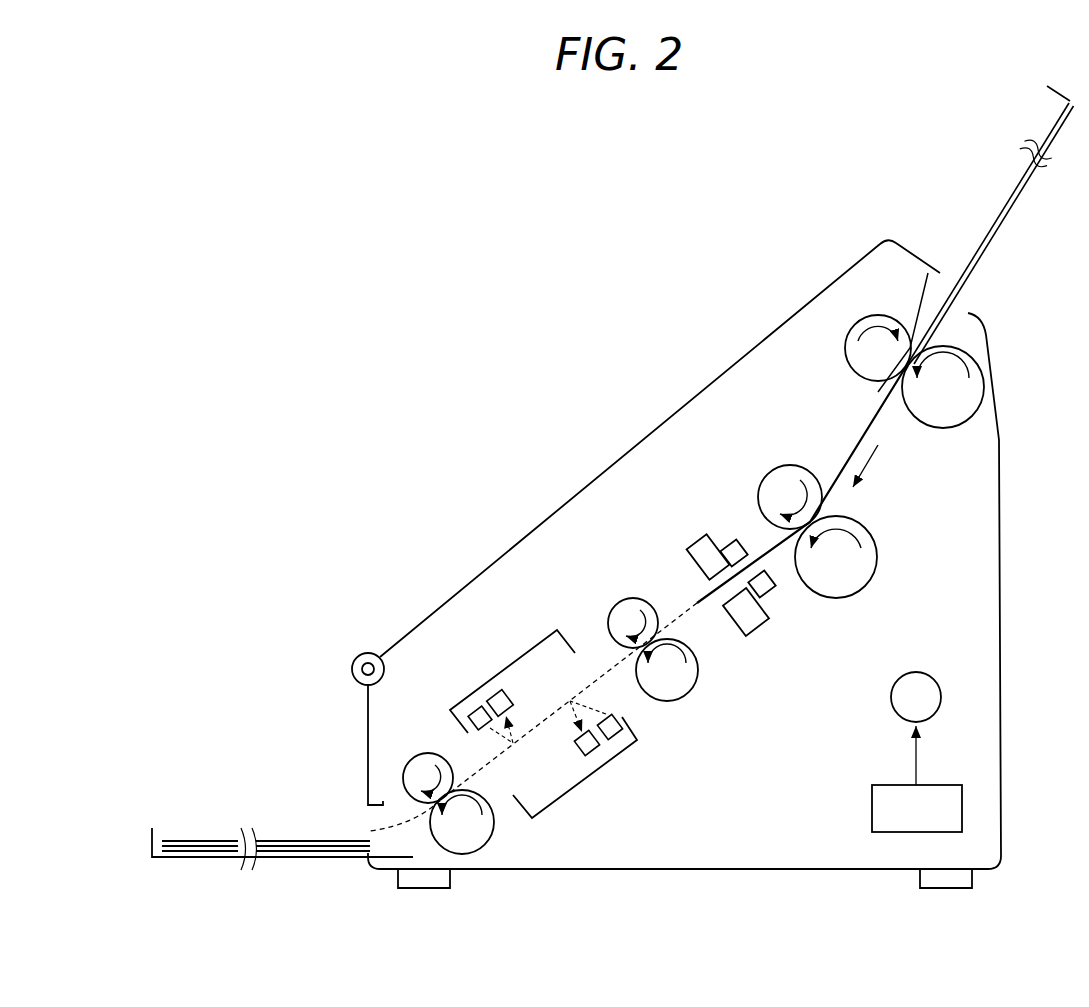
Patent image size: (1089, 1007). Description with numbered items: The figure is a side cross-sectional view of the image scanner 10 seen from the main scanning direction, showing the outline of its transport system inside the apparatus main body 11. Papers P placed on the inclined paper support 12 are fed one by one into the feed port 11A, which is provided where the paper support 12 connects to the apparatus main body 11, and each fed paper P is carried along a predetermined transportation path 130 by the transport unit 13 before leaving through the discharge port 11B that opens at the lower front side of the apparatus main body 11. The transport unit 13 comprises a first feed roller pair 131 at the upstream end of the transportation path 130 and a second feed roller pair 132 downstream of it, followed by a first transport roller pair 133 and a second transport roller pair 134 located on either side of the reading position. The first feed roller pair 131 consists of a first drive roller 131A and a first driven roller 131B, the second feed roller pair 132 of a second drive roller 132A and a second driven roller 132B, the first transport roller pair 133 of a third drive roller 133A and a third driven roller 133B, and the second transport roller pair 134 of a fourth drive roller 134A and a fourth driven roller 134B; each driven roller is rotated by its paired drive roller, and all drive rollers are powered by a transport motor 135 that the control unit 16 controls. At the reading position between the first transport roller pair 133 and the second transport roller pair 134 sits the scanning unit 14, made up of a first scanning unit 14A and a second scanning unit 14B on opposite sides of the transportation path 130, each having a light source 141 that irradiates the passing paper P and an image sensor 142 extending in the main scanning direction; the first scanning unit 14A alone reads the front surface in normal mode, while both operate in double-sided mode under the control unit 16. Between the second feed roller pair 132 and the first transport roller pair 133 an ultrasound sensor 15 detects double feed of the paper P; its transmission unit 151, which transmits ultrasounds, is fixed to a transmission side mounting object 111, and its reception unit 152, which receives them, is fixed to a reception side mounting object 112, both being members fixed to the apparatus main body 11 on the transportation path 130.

The image scanner 10 is at (503, 386).
The apparatus main body 11 is at (1002, 640).
The feed port 11A is at (928, 285).
The discharge port 11B is at (370, 812).
The paper support 12 is at (992, 240).
The transport unit 13 is at (957, 537).
The scanning unit 14 is at (657, 818).
The first scanning unit 14A is at (572, 790).
The second scanning unit 14B is at (522, 652).
The ultrasound sensor 15 is at (772, 608).
The control unit 16 is at (962, 808).
The transmission side mounting object 111 is at (698, 542).
The reception side mounting object 112 is at (753, 638).
The transportation path 130 is at (702, 612).
The first feed roller pair 131 is at (928, 373).
The first drive roller 131A is at (942, 430).
The first driven roller 131B is at (858, 322).
The second feed roller pair 132 is at (808, 468).
The second drive roller 132A is at (877, 572).
The second driven roller 132B is at (800, 466).
The first transport roller pair 133 is at (642, 616).
The third drive roller 133A is at (690, 695).
The third driven roller 133B is at (637, 598).
The second transport roller pair 134 is at (431, 832).
The fourth drive roller 134A is at (463, 855).
The fourth driven roller 134B is at (404, 775).
The transport motor 135 is at (917, 672).
The light source 141 is at (468, 708).
The image sensor 142 is at (477, 684).
The transmission unit 151 is at (728, 547).
The reception unit 152 is at (773, 594).
The paper P is at (277, 840).